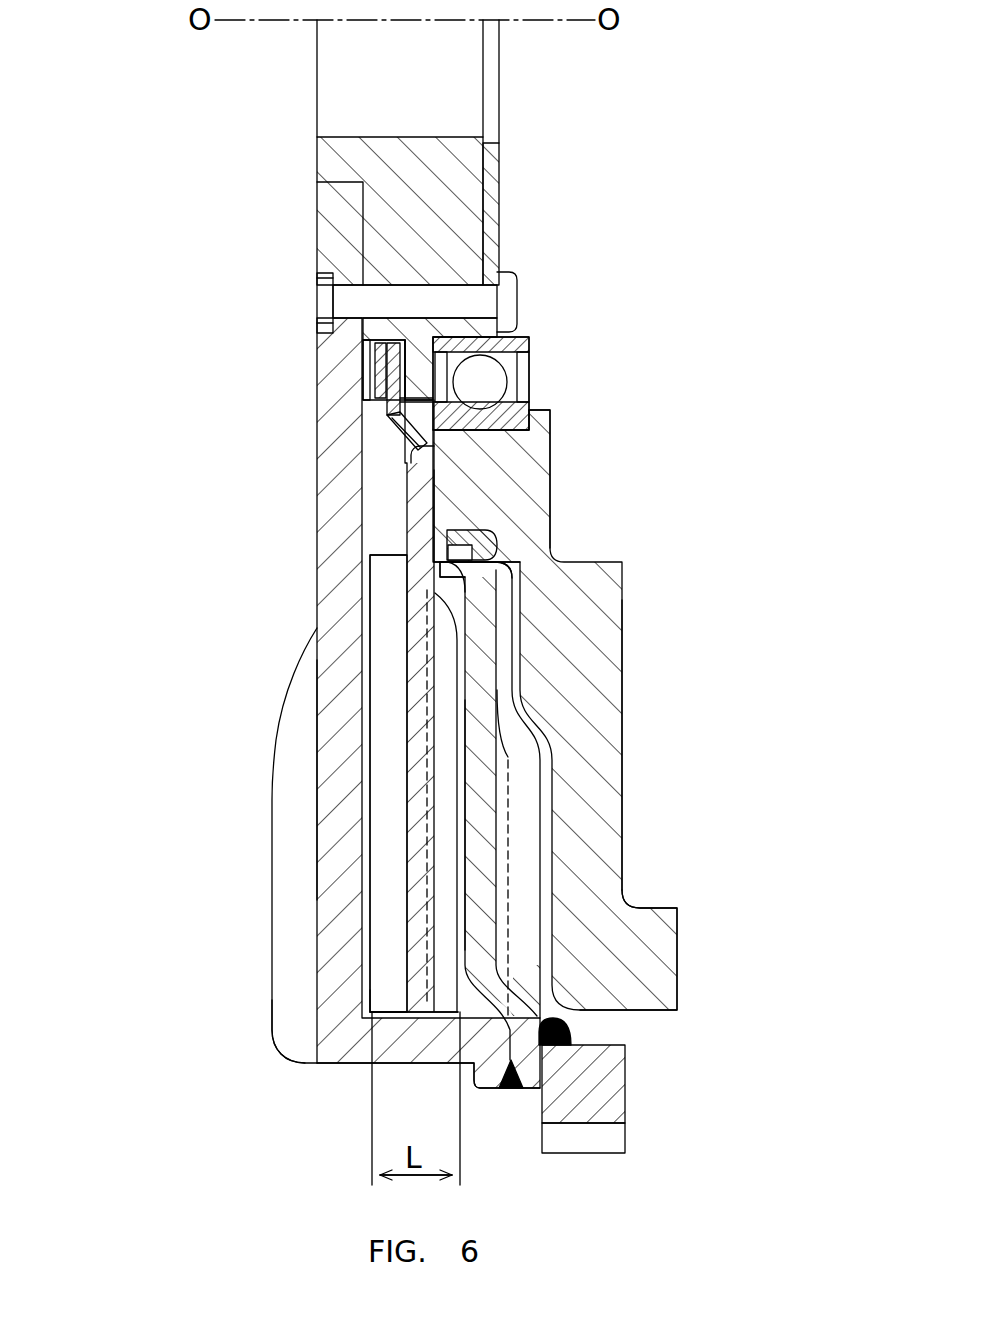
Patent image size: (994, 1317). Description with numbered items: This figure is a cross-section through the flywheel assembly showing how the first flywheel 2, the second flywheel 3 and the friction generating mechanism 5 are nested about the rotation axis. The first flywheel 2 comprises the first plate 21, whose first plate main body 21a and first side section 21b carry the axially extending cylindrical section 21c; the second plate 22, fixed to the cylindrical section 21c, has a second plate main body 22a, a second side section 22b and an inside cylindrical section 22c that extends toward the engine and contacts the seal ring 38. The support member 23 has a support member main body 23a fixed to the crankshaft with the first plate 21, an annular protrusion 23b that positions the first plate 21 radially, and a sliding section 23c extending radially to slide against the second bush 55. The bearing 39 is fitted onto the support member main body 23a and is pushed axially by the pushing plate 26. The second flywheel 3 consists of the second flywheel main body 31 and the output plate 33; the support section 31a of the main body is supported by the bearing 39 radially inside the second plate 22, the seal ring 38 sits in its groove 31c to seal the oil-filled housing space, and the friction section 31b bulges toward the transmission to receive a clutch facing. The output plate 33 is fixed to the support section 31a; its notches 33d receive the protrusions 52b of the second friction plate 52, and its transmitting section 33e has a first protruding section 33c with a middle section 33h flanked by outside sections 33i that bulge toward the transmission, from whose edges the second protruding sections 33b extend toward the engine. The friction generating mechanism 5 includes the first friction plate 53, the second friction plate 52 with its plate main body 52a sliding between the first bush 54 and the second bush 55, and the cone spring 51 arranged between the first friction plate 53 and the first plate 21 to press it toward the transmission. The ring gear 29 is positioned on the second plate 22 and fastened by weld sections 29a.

The first flywheel 2 is at (275, 1042).
The second flywheel 3 is at (690, 997).
The friction generating mechanism 5 is at (350, 385).
The first plate 21 is at (318, 500).
The first plate main body 21a is at (335, 907).
The first side section 21b is at (290, 980).
The cylindrical section 21c is at (412, 1046).
The second plate 22 is at (553, 773).
The second plate main body 22a is at (485, 820).
The second side section 22b is at (520, 873).
The inside cylindrical section 22c is at (462, 590).
The support member 23 is at (355, 255).
The support member main body 23a is at (375, 205).
The annular protrusion 23b is at (330, 150).
The sliding section 23c is at (445, 392).
The pushing plate 26 is at (497, 200).
The ring gear 29 is at (625, 1088).
The weld section 29a is at (574, 1030).
The second flywheel main body 31 is at (625, 628).
The support section 31a is at (525, 458).
The friction section 31b is at (590, 685).
The groove 31c is at (445, 548).
The output plate 33 is at (365, 650).
The second protruding section 33b is at (390, 843).
The first protruding section 33c is at (152, 712).
The notch 33d is at (440, 468).
The transmitting section 33e is at (370, 982).
The middle section 33h is at (427, 730).
The outside section 33i is at (447, 797).
The seal ring 38 is at (478, 540).
The bearing 39 is at (535, 375).
The cone spring 51 is at (392, 392).
The second friction plate 52 is at (388, 432).
The plate main body 52a is at (372, 342).
The protrusion 52b is at (410, 448).
The first friction plate 53 is at (381, 370).
The first bush 54 is at (345, 320).
The second bush 55 is at (440, 372).